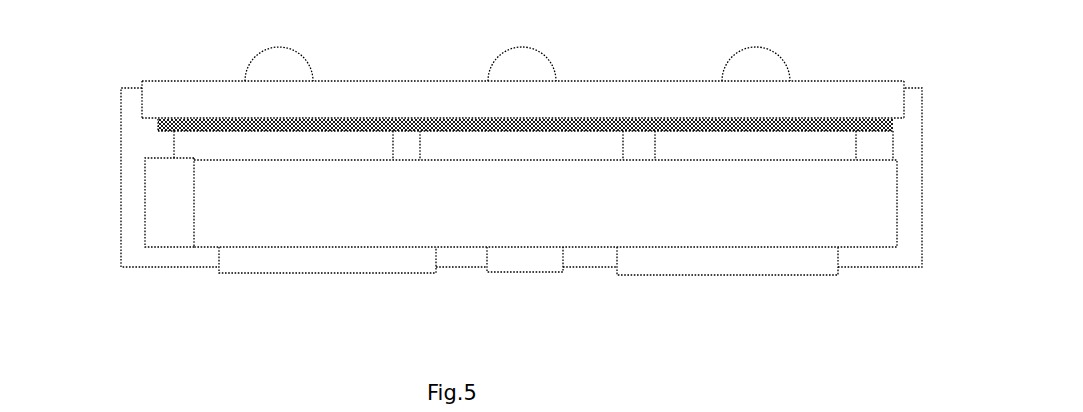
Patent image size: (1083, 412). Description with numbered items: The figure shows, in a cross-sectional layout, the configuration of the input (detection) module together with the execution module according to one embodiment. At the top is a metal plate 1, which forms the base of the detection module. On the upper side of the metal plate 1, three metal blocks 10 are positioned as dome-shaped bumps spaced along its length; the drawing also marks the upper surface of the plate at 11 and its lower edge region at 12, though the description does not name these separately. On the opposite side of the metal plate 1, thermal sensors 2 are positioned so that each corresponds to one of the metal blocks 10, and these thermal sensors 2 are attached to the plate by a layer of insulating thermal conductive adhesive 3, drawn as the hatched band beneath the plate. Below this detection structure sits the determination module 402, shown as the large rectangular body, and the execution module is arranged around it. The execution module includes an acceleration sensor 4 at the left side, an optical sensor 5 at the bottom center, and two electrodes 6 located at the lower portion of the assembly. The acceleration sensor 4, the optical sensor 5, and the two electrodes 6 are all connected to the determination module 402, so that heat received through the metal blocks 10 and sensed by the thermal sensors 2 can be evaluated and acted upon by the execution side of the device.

The metal plate 1 is at (182, 105).
The metal block 10 is at (287, 72).
The top surface of cover plate 11 is at (830, 81).
The bottom surface of cover plate 12 is at (143, 118).
The insulating thermal conductive adhesive 3 is at (163, 130).
The thermal sensor 2 is at (857, 142).
The acceleration sensor 4 is at (145, 237).
The determination module 402 is at (897, 179).
The optical sensor 5 is at (538, 272).
The electrode 6 is at (838, 248).